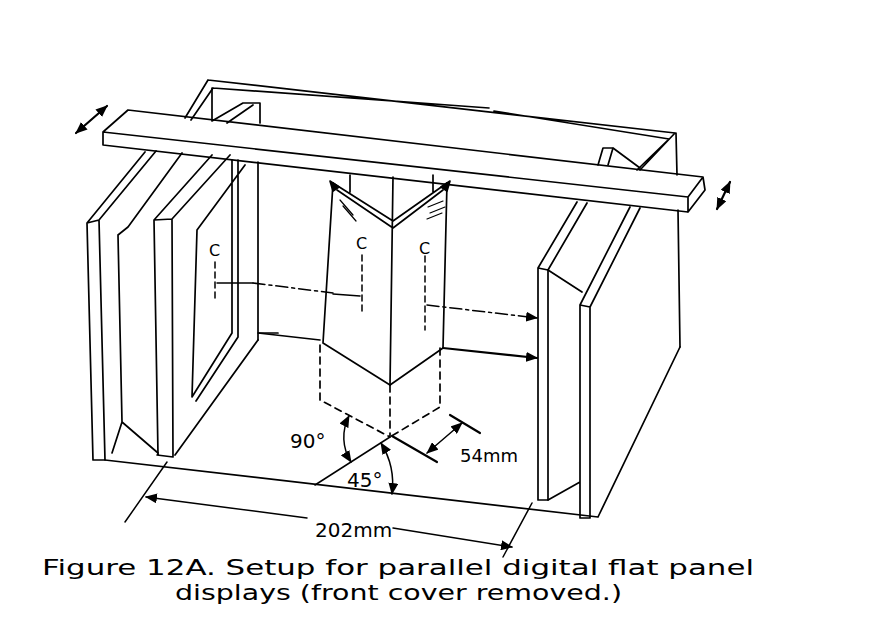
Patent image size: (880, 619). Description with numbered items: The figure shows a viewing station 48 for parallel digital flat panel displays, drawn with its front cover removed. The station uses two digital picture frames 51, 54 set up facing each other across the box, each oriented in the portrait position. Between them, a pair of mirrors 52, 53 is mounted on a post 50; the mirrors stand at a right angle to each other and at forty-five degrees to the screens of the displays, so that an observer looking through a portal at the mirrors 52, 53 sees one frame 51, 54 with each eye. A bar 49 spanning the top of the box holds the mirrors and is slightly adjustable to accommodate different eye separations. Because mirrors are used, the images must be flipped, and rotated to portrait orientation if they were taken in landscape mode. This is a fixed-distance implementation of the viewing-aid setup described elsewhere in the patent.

The viewing station 48 is at (203, 80).
The bar 49 is at (292, 143).
The post 50 is at (370, 188).
The digital picture frame 51 is at (598, 230).
The mirror 52 is at (415, 347).
The mirror 53 is at (367, 353).
The digital picture frame 54 is at (130, 323).